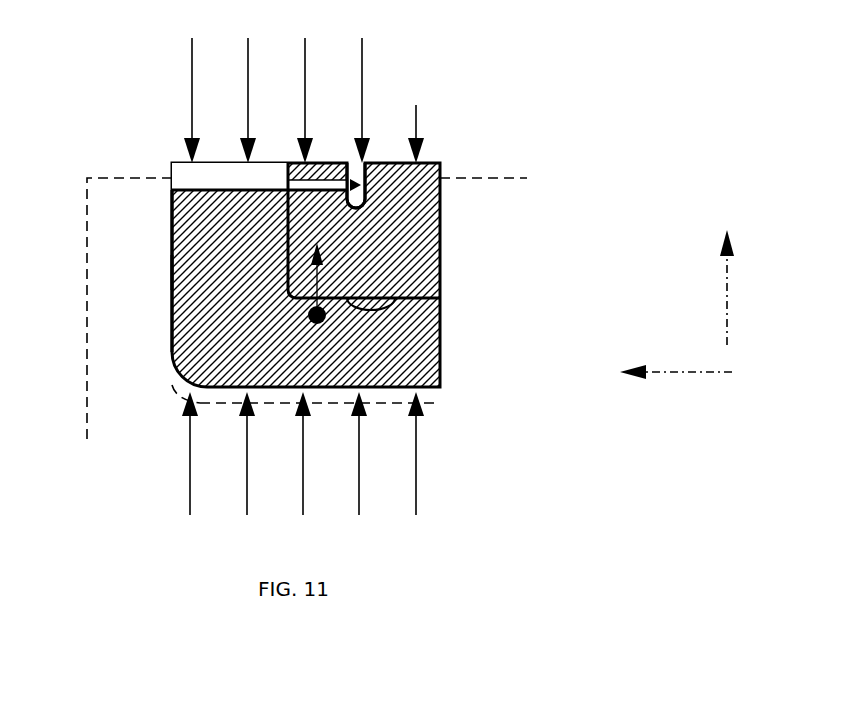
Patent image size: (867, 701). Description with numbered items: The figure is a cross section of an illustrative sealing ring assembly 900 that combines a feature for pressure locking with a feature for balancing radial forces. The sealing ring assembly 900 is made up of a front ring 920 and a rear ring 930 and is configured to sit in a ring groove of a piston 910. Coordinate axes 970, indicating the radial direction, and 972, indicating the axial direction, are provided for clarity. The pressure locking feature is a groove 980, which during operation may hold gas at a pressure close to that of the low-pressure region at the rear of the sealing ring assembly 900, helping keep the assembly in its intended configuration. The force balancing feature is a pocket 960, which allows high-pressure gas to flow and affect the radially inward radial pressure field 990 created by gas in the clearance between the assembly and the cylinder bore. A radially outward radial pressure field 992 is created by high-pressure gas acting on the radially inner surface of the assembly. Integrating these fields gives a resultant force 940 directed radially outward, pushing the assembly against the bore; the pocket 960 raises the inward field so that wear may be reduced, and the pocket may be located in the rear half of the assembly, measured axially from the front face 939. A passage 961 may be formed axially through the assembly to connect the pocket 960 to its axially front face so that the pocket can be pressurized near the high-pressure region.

The sealing ring assembly 900 is at (92, 80).
The piston 910 is at (345, 186).
The front ring 920 is at (250, 252).
The rear ring 930 is at (407, 252).
The face 939 is at (176, 270).
The resultant force 940 is at (330, 285).
The pocket 960 is at (366, 202).
The passage 961 is at (352, 185).
The coordinate axis 970 is at (749, 220).
The coordinate axis 972 is at (613, 384).
The groove 980 is at (405, 300).
The radial pressure field 990 is at (302, 28).
The radial pressure field 992 is at (294, 540).